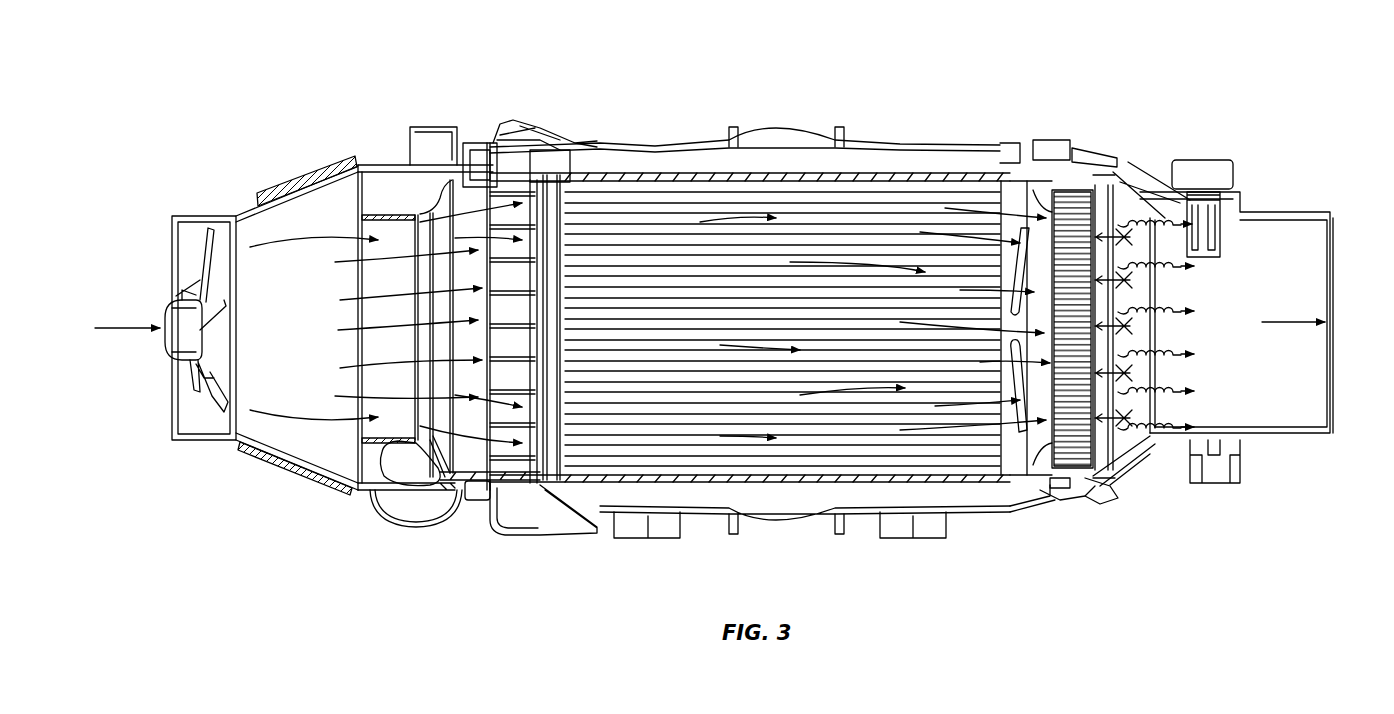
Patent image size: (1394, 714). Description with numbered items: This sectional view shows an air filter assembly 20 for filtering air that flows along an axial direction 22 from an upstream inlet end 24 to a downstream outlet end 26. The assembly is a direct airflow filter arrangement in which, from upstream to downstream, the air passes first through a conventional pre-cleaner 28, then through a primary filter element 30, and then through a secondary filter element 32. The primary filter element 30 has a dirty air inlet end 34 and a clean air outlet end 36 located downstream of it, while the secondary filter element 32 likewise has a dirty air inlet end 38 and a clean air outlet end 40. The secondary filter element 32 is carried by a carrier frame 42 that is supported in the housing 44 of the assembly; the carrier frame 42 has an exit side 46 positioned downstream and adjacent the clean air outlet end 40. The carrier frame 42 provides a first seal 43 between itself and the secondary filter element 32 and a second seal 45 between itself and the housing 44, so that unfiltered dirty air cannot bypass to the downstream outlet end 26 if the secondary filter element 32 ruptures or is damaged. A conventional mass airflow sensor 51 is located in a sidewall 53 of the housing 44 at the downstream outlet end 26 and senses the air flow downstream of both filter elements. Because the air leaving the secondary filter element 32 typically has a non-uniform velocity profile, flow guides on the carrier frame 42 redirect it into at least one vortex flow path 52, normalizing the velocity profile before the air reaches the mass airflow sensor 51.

The air filter assembly 20 is at (976, 58).
The axial direction 22 is at (117, 330).
The upstream inlet end 24 is at (174, 254).
The downstream outlet end 26 is at (1326, 246).
The pre-cleaner 28 is at (360, 494).
The primary filter element 30 is at (684, 176).
The secondary filter element 32 is at (1076, 198).
The dirty air inlet end 34 is at (500, 160).
The clean air outlet end 36 is at (1022, 195).
The dirty air inlet end 38 is at (1050, 496).
The clean air outlet end 40 is at (1157, 220).
The carrier frame 42 is at (1094, 499).
The first seal 43 is at (1115, 214).
The housing 44 is at (870, 147).
The second seal 45 is at (1060, 502).
The exit side 46 is at (1103, 425).
The mass airflow (MAF) sensor 51 is at (1234, 178).
The vortex flow path 52 is at (1168, 222).
The sidewall 53 is at (1288, 240).